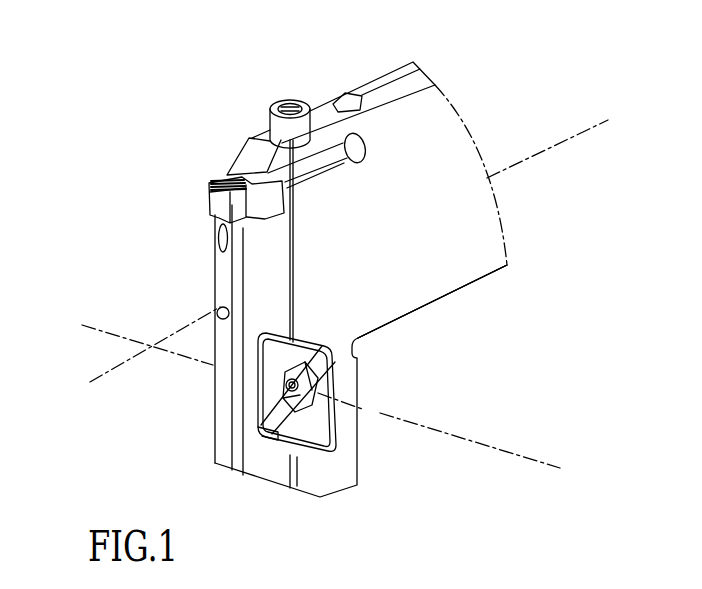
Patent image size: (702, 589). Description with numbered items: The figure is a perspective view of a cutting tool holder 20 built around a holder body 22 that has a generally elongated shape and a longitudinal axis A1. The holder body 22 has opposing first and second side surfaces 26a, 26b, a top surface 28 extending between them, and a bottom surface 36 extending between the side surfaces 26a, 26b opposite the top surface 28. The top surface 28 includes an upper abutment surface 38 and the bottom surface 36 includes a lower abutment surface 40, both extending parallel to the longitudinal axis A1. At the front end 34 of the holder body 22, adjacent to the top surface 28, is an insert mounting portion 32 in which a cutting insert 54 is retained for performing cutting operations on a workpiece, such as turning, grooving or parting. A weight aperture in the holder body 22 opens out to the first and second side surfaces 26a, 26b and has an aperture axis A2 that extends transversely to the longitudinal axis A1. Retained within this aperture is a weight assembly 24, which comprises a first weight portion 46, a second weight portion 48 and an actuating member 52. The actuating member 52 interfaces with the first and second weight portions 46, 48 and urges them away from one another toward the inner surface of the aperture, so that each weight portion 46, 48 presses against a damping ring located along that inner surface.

The cutting tool holder 20 is at (172, 217).
The holder body 22 is at (443, 263).
The weight assembly 24 is at (325, 383).
The first side surface 26a is at (383, 138).
The second side surface 26b is at (323, 105).
The top surface 28 is at (338, 108).
The insert mounting portion 32 is at (237, 155).
The front end 34 is at (216, 272).
The bottom surface 36 is at (437, 302).
The upper abutment surface 38 is at (392, 80).
The lower abutment surface 40 is at (427, 313).
The first weight portion 46 is at (275, 350).
The second weight portion 48 is at (305, 428).
The actuating member 52 is at (292, 400).
The cutting insert 54 is at (212, 200).
The longitudinal axis A1 is at (349, 254).
The aperture axis A2 is at (320, 401).